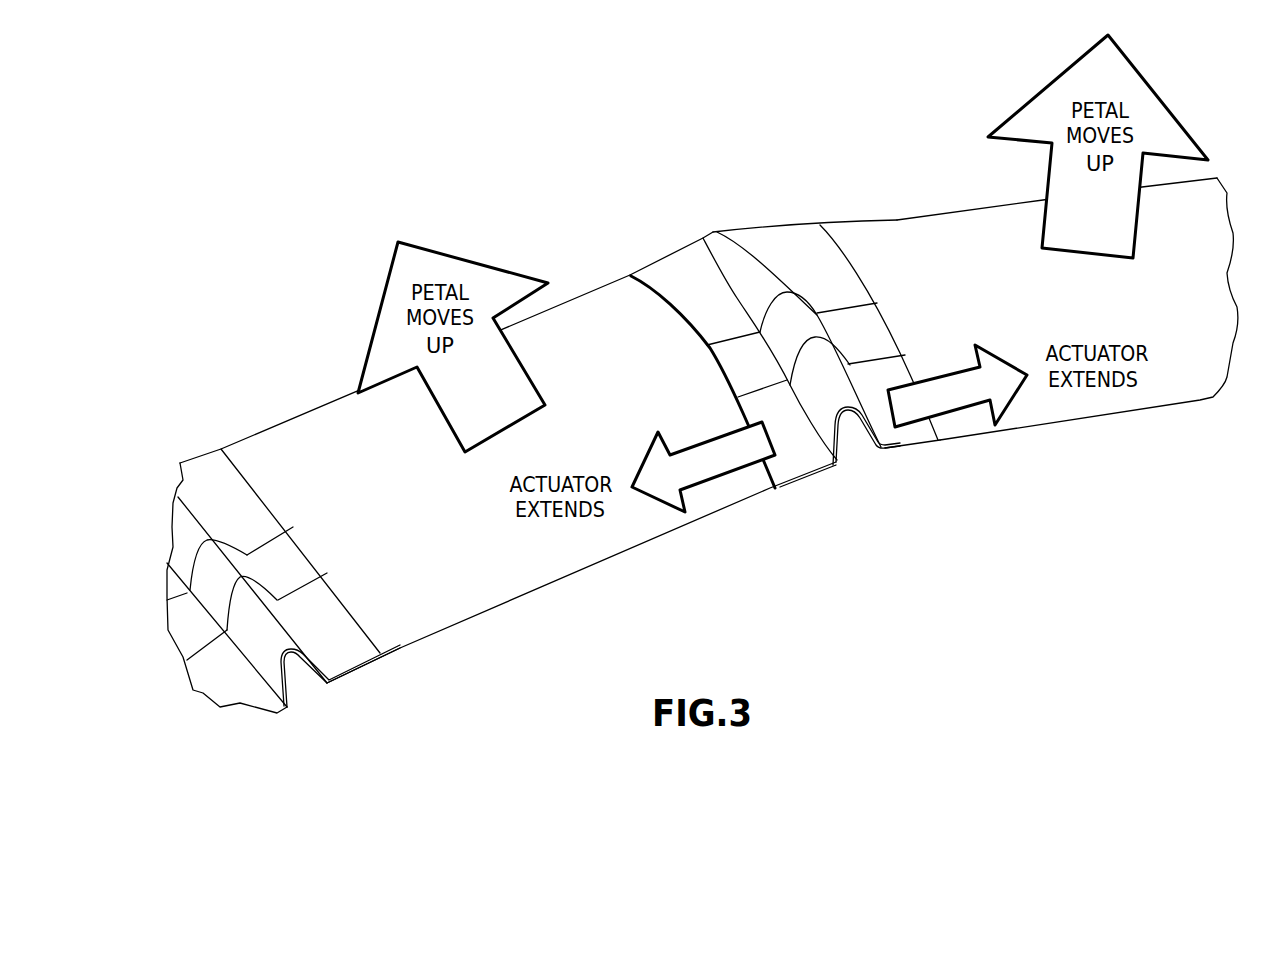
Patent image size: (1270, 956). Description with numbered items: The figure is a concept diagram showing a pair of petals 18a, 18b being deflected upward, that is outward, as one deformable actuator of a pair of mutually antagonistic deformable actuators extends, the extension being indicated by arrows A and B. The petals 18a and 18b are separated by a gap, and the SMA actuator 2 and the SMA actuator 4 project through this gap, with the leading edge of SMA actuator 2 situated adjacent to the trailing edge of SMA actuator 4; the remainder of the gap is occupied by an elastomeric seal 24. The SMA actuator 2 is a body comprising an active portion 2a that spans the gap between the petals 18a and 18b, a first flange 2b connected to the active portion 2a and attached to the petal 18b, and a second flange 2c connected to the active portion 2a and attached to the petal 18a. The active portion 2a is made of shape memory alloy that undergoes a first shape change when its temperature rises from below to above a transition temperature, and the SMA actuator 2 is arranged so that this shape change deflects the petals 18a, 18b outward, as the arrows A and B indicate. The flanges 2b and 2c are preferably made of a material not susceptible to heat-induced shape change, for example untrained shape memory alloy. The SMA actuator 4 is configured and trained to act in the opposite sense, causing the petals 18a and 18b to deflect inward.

The SMA actuator 2 is at (908, 363).
The active portion 2a is at (820, 383).
The first flange 2b is at (812, 460).
The second flange 2c is at (917, 433).
The SMA actuator 4 is at (888, 313).
The elastomeric seal 24 is at (833, 268).
The petal 18a is at (1157, 387).
The petal 18b is at (498, 577).
The arrow A is at (727, 475).
The arrow B is at (968, 408).